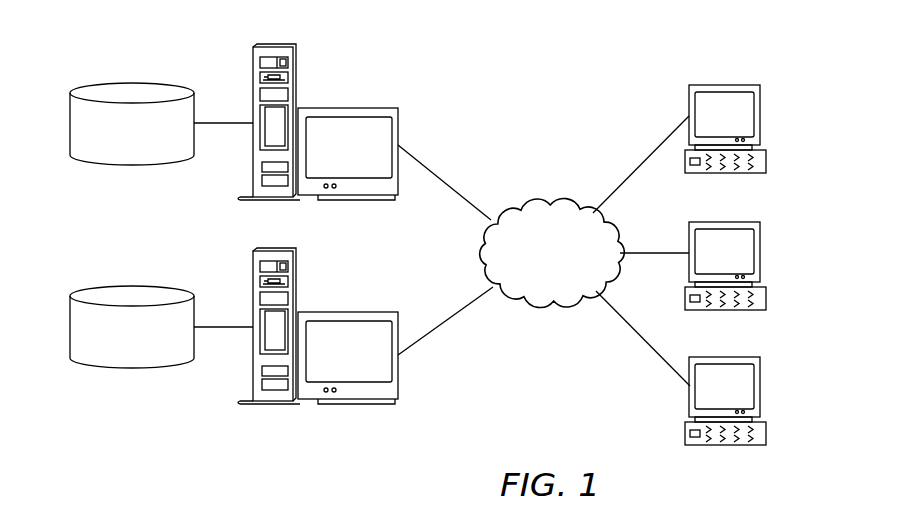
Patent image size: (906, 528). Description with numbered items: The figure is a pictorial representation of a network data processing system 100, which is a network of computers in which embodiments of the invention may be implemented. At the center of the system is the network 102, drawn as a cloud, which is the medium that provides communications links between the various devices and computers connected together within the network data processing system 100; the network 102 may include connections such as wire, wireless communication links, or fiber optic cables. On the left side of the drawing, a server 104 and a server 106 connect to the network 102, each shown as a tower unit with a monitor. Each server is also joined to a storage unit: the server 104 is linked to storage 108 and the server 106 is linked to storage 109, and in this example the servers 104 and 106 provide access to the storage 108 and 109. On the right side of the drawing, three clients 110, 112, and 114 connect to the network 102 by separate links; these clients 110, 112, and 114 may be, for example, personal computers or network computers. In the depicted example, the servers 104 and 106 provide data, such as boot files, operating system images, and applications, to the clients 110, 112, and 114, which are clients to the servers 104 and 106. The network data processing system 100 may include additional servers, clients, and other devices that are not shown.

The network data processing system 100 is at (599, 99).
The network 102 is at (525, 205).
The server 104 is at (347, 108).
The server 106 is at (352, 403).
The storage 108 is at (131, 83).
The storage 109 is at (132, 368).
The client 110 is at (760, 114).
The client 112 is at (760, 253).
The client 114 is at (760, 390).